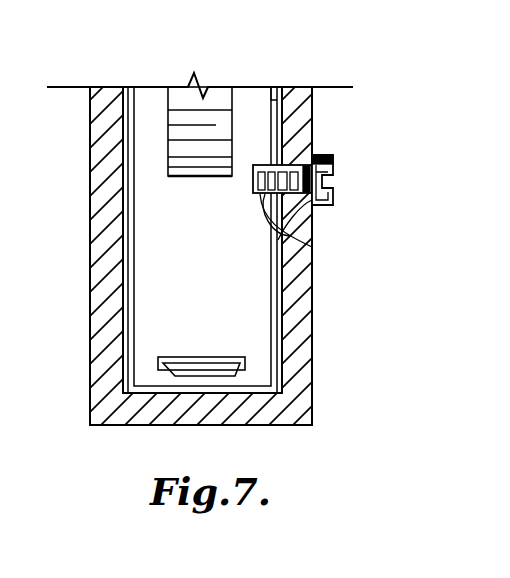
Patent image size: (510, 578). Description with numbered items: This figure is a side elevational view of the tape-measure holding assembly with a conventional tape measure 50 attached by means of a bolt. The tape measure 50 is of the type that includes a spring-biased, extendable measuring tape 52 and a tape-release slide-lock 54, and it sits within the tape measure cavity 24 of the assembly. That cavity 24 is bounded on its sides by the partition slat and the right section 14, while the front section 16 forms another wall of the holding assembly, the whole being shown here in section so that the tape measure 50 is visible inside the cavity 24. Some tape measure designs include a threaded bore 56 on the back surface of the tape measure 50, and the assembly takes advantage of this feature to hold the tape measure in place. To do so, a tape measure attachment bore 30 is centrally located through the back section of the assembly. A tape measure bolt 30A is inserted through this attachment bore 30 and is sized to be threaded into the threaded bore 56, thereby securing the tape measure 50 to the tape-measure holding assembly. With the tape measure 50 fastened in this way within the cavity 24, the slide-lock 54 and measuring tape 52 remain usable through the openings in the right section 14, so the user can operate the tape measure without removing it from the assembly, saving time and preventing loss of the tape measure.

The right section 14 is at (300, 325).
The front section 16 is at (102, 325).
The tape measure cavity 24 is at (273, 98).
The tape measure attachment bore 30 is at (312, 218).
The tape measure bolt 30A is at (326, 188).
The tape measure 50 is at (162, 232).
The measuring tape 52 is at (222, 138).
The tape-release slide-lock 54 is at (226, 368).
The threaded bore 56 is at (312, 247).